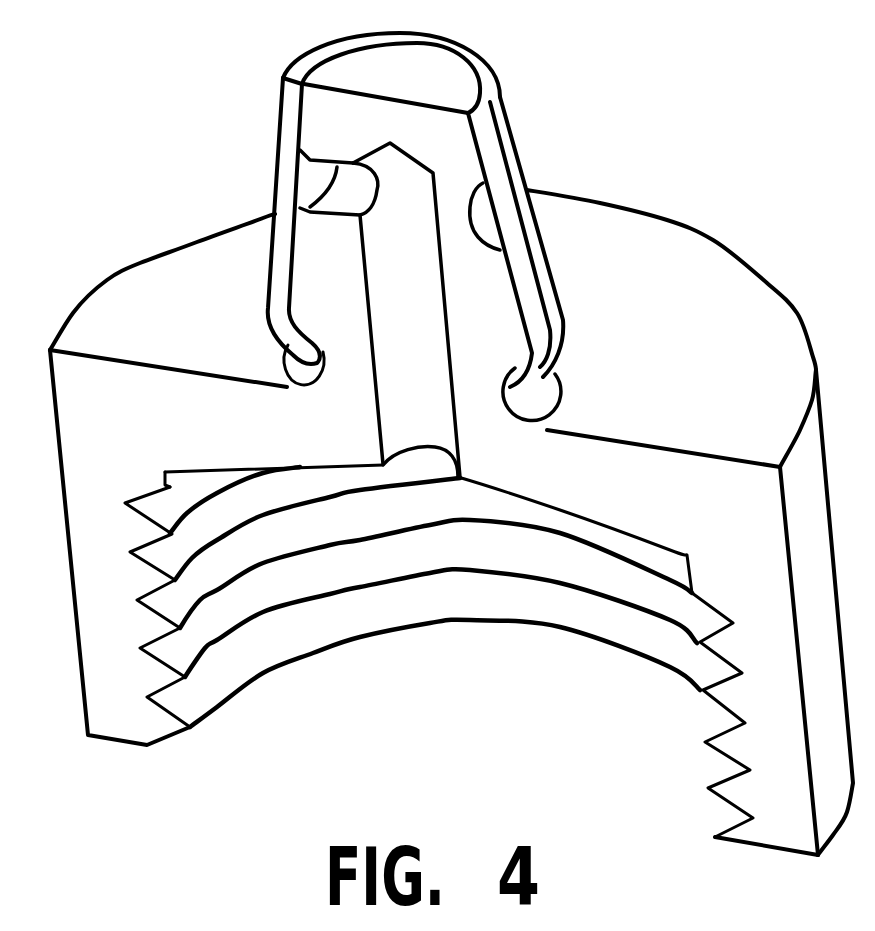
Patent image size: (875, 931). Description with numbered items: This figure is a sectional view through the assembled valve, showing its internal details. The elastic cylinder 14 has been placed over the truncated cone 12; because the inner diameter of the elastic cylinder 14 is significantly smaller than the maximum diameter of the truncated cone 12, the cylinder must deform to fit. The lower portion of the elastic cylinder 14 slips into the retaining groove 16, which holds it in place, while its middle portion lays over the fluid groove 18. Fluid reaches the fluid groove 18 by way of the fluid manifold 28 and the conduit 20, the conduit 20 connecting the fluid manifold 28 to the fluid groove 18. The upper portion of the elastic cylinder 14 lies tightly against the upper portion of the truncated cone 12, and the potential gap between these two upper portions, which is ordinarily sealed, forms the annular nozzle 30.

The truncated cone 12 is at (375, 193).
The elastic cylinder 14 is at (270, 262).
The retaining groove 16 is at (513, 402).
The fluid groove 18 is at (483, 213).
The conduit 20 is at (337, 197).
The fluid manifold 28 is at (418, 308).
The annular nozzle 30 is at (323, 62).